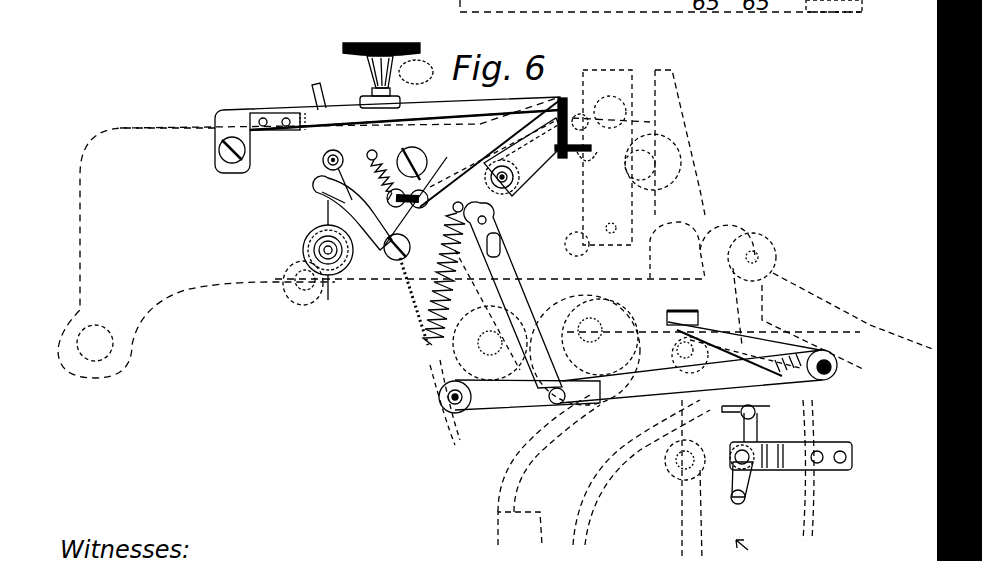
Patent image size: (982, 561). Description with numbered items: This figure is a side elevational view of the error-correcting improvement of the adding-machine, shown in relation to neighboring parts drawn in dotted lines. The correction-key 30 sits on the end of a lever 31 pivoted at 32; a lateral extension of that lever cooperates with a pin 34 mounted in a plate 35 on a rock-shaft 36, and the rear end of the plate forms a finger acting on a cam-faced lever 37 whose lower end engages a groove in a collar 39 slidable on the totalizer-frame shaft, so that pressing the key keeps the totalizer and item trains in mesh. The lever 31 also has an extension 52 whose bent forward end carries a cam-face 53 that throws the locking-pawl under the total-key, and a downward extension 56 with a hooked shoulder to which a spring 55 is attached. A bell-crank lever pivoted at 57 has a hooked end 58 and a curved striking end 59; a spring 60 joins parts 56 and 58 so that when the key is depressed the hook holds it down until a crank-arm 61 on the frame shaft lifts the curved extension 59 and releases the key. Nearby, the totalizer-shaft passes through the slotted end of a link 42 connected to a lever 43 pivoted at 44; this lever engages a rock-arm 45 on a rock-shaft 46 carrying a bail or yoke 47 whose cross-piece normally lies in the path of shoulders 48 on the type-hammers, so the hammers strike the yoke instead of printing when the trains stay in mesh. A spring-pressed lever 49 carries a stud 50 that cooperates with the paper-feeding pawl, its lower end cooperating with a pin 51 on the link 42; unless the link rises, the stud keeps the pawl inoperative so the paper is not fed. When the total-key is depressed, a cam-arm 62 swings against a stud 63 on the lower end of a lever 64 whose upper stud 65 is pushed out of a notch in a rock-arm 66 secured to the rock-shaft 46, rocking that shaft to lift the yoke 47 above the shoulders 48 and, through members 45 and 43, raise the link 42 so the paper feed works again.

The correction-key 30 is at (384, 43).
The lever 31 is at (245, 112).
The pivot 32 is at (232, 163).
The pin 34 is at (416, 72).
The plate 35 is at (318, 148).
The rock-shaft 36 is at (396, 156).
The lever 37 is at (314, 192).
The collar 39 is at (303, 250).
The link 42 is at (505, 242).
The lever 43 is at (500, 404).
The pivot 44 is at (452, 405).
The rock-arm 45 is at (717, 387).
The rock-shaft 46 is at (827, 378).
The bail or yoke 47 is at (680, 311).
The shoulders 48 is at (698, 312).
The spring-pressed lever 49 is at (538, 160).
The stud 50 is at (587, 128).
The pin 51 is at (589, 150).
The extension 52 is at (455, 112).
The cam-face 53 is at (333, 276).
The spring 55 is at (365, 171).
The downward extension 56 is at (507, 190).
The pivot 57 is at (405, 260).
The hooked end 58 is at (422, 217).
The curved striking end 59 is at (335, 199).
The spring 60 is at (472, 172).
The crank-arm 61 is at (308, 298).
The cam-arm 62 is at (754, 549).
The stud 63 is at (743, 498).
The lever 64 is at (743, 475).
The stud 65 is at (752, 418).
The rock-arm 66 is at (758, 412).